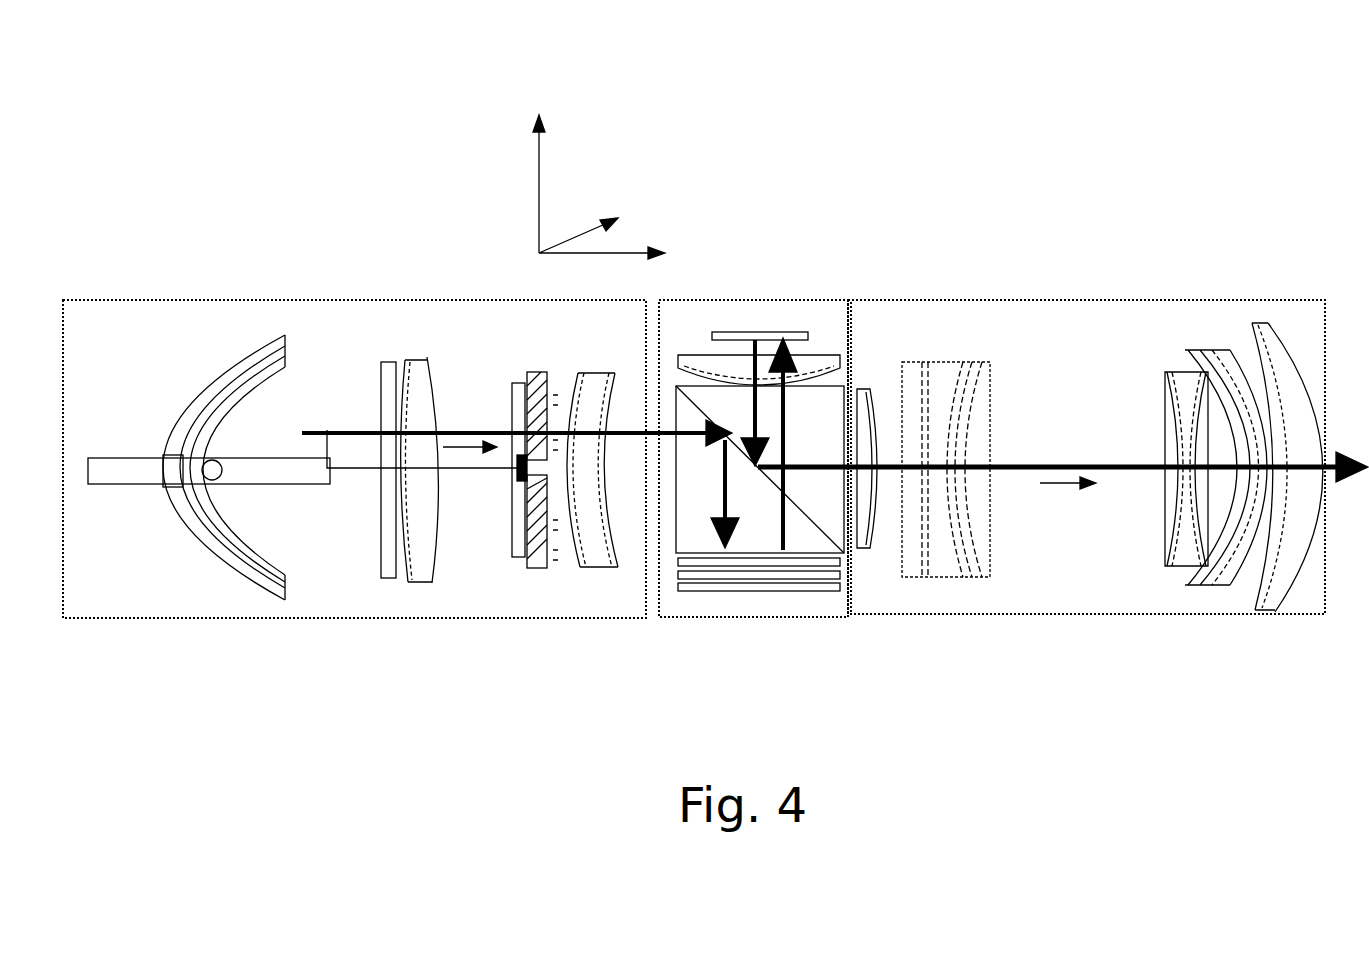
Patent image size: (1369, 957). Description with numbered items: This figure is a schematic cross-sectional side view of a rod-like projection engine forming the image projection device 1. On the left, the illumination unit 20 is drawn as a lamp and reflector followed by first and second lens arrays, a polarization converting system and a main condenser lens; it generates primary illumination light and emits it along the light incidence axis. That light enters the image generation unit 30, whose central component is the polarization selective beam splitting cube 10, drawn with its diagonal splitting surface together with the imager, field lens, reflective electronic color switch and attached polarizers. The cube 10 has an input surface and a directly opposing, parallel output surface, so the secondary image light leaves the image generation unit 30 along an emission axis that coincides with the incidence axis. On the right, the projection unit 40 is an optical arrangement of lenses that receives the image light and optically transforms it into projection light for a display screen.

The image projection device 1 is at (322, 166).
The illumination unit 20 is at (282, 298).
The image generation unit 30 is at (737, 298).
The projection unit 40 is at (1050, 298).
The polarization selective beam splitting cube 10 is at (838, 430).